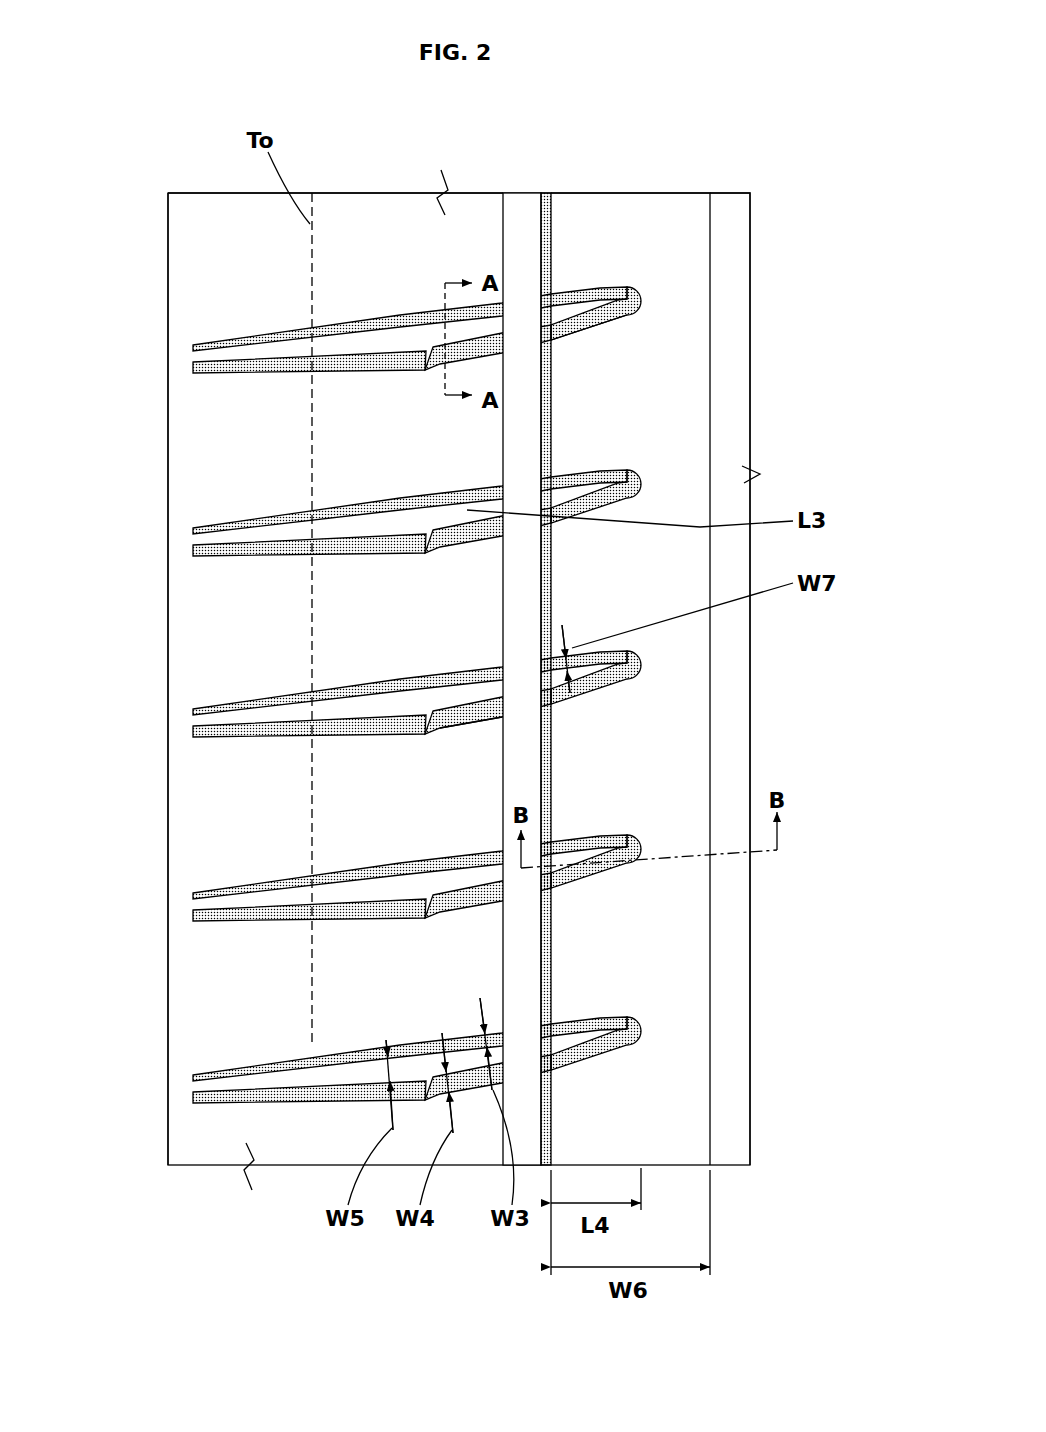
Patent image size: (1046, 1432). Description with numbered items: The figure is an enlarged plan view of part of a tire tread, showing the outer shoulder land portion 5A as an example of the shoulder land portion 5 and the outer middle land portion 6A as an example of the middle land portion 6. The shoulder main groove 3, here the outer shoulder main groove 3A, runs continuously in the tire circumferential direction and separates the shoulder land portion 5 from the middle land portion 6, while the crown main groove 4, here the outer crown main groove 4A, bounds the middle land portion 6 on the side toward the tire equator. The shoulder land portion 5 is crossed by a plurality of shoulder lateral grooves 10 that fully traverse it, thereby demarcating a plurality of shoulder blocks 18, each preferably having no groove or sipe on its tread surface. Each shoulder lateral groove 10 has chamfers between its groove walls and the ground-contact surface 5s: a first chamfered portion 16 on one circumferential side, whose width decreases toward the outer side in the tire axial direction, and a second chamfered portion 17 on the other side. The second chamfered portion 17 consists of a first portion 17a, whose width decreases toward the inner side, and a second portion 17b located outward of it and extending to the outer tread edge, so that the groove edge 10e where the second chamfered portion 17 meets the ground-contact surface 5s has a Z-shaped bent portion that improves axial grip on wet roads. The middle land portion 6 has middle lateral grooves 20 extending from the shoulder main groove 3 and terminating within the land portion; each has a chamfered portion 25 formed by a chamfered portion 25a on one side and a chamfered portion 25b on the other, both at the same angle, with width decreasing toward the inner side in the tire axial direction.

The shoulder main groove 3 is at (518, 639).
The outer shoulder main groove 3A is at (522, 230).
The crown main groove 4 is at (740, 639).
The outer crown main groove 4A is at (724, 232).
The shoulder land portion 5 is at (288, 639).
The outer shoulder land portion 5A is at (240, 679).
The ground-contact surface 5s is at (352, 277).
The middle land portion 6 is at (630, 639).
The outer middle land portion 6A is at (624, 233).
The shoulder lateral groove 10 is at (460, 760).
The groove edge 10e is at (463, 731).
The first chamfered portion 16 is at (392, 505).
The second chamfered portion 17 is at (289, 799).
The first portion 17a is at (445, 545).
The second portion 17b is at (478, 530).
The shoulder block 18 is at (383, 432).
The middle lateral groove 20 is at (722, 659).
The chamfered portion 25 is at (722, 659).
The chamfered portion 25a is at (620, 289).
The chamfered portion 25b is at (560, 338).